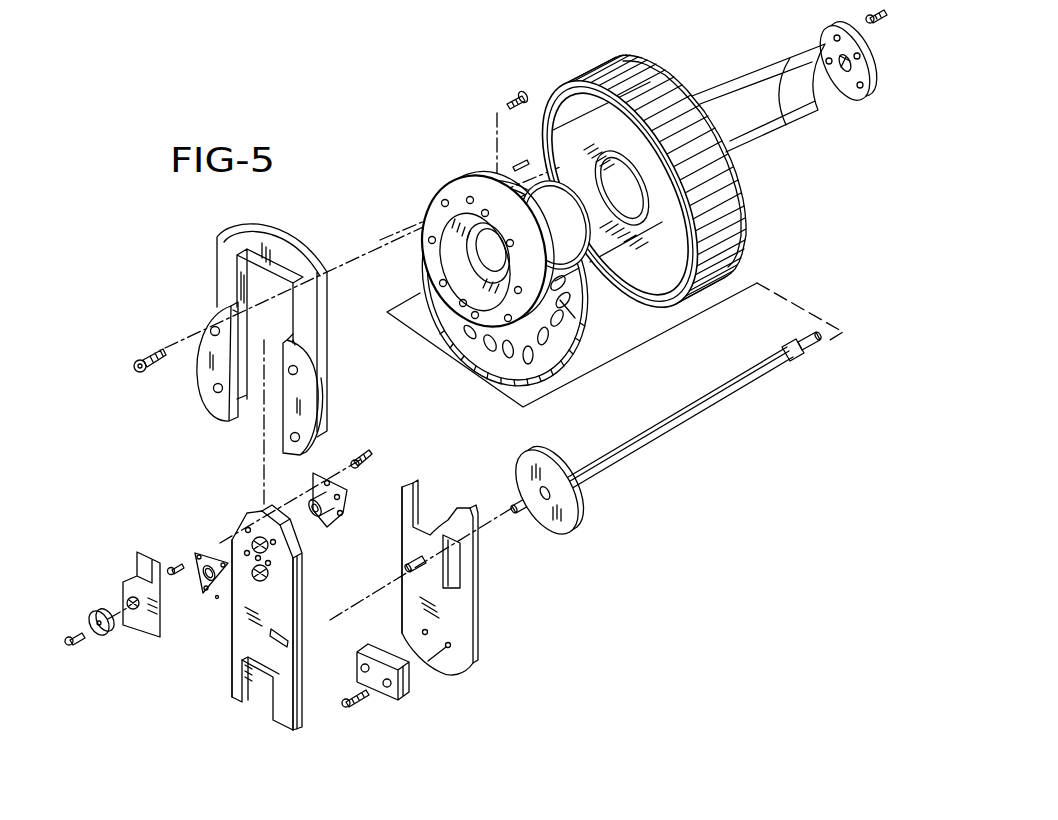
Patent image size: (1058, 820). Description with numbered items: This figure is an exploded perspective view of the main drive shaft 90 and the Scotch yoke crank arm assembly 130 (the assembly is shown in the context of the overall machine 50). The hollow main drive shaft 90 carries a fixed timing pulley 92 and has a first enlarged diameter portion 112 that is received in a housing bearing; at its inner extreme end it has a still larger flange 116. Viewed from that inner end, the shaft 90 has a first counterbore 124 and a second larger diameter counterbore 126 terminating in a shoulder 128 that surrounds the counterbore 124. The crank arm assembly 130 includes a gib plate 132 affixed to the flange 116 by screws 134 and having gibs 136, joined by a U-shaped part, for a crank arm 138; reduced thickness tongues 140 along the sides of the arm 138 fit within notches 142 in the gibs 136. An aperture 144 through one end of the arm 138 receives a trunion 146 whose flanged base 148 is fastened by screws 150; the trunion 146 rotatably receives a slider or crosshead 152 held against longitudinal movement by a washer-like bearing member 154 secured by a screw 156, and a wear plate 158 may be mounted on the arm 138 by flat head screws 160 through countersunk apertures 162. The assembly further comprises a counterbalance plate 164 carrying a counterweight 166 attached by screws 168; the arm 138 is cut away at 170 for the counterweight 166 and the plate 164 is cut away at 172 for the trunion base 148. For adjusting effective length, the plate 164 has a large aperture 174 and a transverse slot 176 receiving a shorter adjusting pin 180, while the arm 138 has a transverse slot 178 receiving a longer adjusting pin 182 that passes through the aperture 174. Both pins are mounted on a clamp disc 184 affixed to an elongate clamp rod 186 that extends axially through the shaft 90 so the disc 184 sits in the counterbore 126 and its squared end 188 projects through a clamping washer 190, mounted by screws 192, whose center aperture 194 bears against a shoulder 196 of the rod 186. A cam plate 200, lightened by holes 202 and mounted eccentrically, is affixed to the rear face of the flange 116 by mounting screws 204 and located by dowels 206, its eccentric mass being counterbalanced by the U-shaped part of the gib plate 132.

The cutting head assembly 50 is at (340, 6).
The main drive shaft 90 is at (775, 158).
The timing pulley 92 is at (753, 220).
The first enlarged diameter portion 112 is at (557, 193).
The flange 116 is at (507, 271).
The first counterbore 124 is at (457, 313).
The second larger diameter counterbore 126 is at (440, 281).
The shoulder 128 is at (429, 241).
The Scotch yoke crank arm assembly 130 is at (239, 322).
The gib plate 132 is at (273, 247).
The screws 134 is at (148, 360).
The gibs 136 is at (203, 377).
The crank arm 138 is at (262, 612).
The tongues 140 is at (227, 633).
The notches 142 is at (293, 340).
The aperture 144 is at (247, 530).
The trunion 146 is at (323, 513).
The flanged base 148 is at (347, 509).
The screws 150 is at (360, 457).
The slider or crosshead 152 is at (133, 570).
The bearing member 154 is at (100, 610).
The screw 156 is at (80, 644).
The wear plate 158 is at (217, 597).
The flat head screws 160 is at (175, 567).
The countersunk apertures 162 is at (199, 567).
The counterbalance plate 164 is at (439, 562).
The counterweight 166 is at (410, 683).
The screws 168 is at (363, 697).
The cut away 170 is at (263, 683).
The cut away 172 is at (425, 523).
The large aperture 174 is at (463, 560).
The transversely extending slot 176 is at (407, 567).
The transverse slot 178 is at (297, 643).
The shorter adjusting pin 180 is at (513, 503).
The longer adjusting pin 182 is at (562, 499).
The clamp disc 184 is at (563, 530).
The clamp rod 186 is at (703, 413).
The squared end 188 is at (813, 350).
The clamping washer 190 is at (870, 73).
The screws 192 is at (887, 13).
The center aperture 194 is at (861, 98).
The shoulder 196 is at (793, 347).
The cam plate 200 is at (585, 332).
The holes 202 is at (576, 349).
The mounting screws 204 is at (515, 100).
The dowels 206 is at (517, 161).